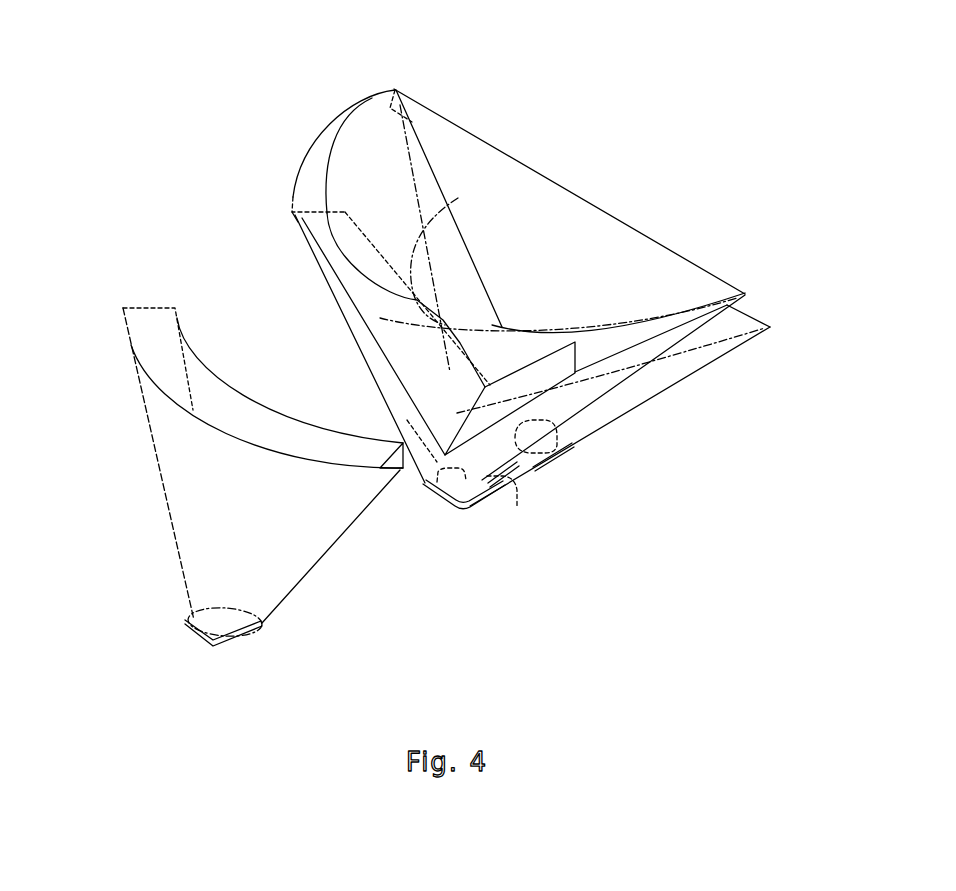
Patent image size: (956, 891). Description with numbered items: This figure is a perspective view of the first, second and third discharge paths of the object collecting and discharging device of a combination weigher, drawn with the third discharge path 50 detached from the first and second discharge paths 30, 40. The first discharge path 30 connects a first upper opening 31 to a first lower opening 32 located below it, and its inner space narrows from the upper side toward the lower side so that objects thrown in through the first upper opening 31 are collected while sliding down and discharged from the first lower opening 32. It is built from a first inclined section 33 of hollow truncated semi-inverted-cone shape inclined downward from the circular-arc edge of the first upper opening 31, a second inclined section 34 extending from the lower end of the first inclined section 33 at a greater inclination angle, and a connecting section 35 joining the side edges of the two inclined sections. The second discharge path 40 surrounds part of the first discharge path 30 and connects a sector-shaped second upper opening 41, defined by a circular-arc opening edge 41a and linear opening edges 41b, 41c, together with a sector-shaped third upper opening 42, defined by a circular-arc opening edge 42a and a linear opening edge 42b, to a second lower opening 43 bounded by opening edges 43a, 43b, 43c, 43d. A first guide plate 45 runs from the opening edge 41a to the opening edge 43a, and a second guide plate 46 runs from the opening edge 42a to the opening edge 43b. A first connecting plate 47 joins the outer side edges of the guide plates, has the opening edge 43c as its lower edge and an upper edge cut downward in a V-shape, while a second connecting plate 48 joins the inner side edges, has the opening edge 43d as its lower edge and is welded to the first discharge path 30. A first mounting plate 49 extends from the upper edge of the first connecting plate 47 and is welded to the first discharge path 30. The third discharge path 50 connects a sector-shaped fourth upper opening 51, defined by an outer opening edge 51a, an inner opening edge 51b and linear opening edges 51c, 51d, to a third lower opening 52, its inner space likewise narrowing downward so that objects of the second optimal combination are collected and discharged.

The first discharge path 30 is at (555, 306).
The first upper opening 31 is at (592, 249).
The first lower opening 32 is at (560, 437).
The first inclined section 33 is at (617, 352).
The second inclined section 34 is at (490, 370).
The connecting section 35 is at (510, 178).
The second discharge path 40 is at (517, 331).
The second upper opening 41 is at (342, 195).
The opening edge 41a is at (300, 167).
The opening edge 41b is at (395, 90).
The opening edge 41c is at (313, 212).
The third upper opening 42 is at (705, 347).
The opening edge 42a is at (700, 350).
The opening edge 42b is at (765, 322).
The second lower opening 43 is at (437, 529).
The opening edge 43a is at (407, 420).
The opening edge 43b is at (467, 510).
The opening edge 43c is at (427, 503).
The opening edge 43d is at (517, 507).
The first guide plate 45 is at (318, 162).
The second guide plate 46 is at (670, 378).
The first connecting plate 47 is at (333, 290).
The second connecting plate 48 is at (737, 328).
The first mounting plate 49 is at (388, 320).
The third discharge path 50 is at (235, 475).
The fourth upper opening 51 is at (263, 442).
The outer opening edge 51a is at (255, 445).
The inner opening edge 51b is at (245, 400).
The opening edge 51c is at (152, 307).
The opening edge 51d is at (350, 583).
The third lower opening 52 is at (222, 623).